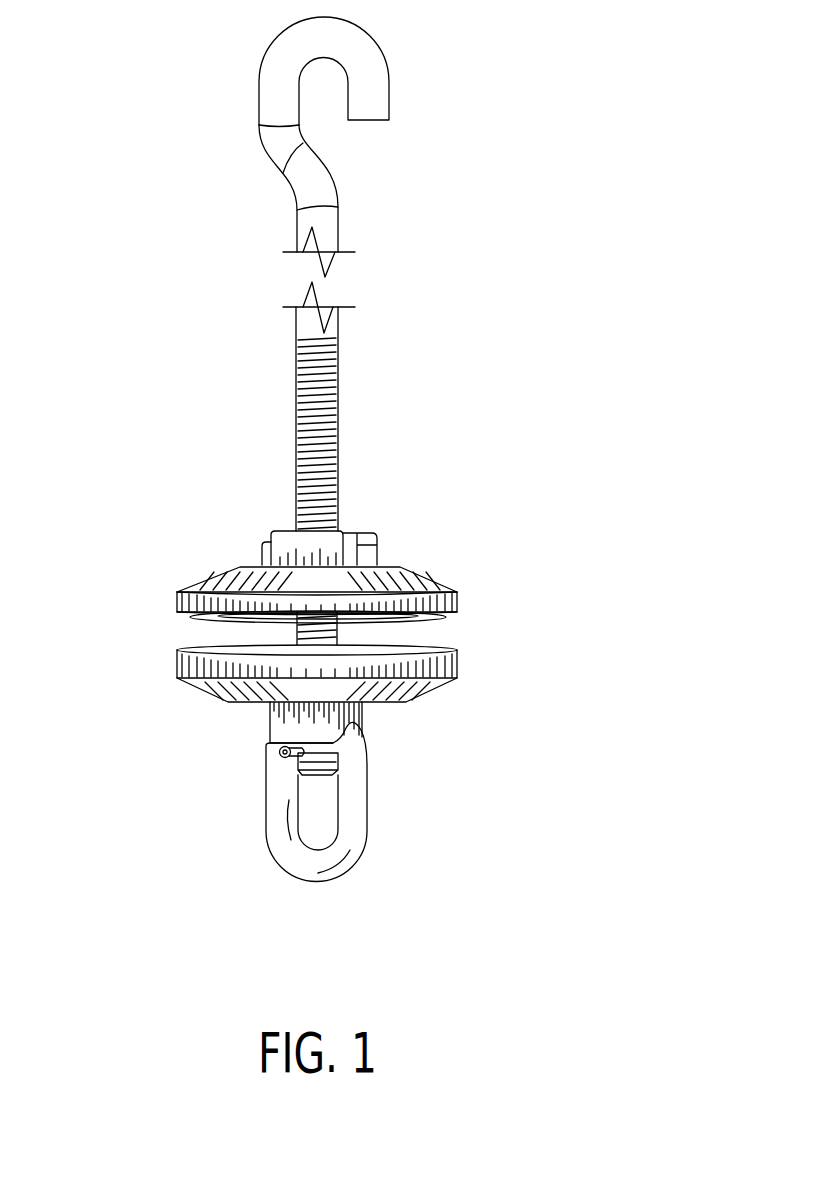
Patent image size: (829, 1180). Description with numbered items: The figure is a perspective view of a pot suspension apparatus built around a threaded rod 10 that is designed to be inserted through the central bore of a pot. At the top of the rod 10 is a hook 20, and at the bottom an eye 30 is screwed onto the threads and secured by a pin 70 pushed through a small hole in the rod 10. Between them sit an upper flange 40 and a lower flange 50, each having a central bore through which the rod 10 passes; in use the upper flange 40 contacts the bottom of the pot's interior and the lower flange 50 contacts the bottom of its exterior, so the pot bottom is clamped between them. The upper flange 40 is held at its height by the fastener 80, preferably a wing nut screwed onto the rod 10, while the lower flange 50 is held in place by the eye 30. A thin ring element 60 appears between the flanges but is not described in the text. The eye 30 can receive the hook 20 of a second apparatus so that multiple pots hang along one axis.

The rod 10 is at (338, 361).
The hook 20 is at (363, 74).
The eye 30 is at (350, 816).
The upper flange 40 is at (243, 566).
The lower flange 50 is at (178, 669).
The gasket ring 60 is at (417, 622).
The pin 70 is at (281, 752).
The upper flange fastener 80 is at (322, 542).